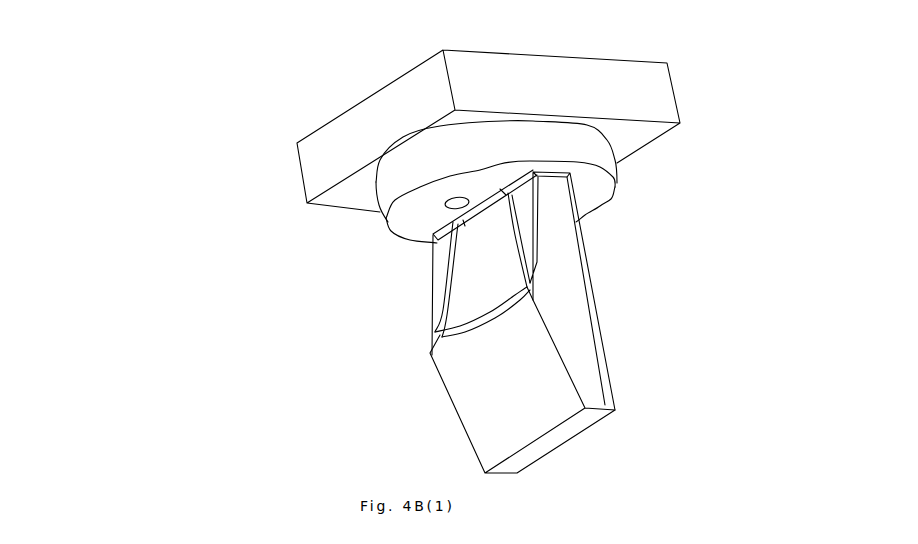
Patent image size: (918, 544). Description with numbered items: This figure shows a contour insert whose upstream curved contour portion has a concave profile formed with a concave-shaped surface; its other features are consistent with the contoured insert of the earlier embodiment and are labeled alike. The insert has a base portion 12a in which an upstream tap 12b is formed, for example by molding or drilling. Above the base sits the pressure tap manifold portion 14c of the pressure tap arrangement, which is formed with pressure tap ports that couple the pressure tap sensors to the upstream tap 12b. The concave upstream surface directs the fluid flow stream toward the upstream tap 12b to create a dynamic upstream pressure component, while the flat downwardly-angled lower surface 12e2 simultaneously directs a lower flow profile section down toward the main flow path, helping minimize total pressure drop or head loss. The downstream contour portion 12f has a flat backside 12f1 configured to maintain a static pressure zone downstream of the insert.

The pressure tap manifold portion 14c is at (355, 132).
The base portion 12a is at (583, 154).
The upstream tap 12b is at (446, 201).
The downstream contour portion 12f is at (603, 273).
The flat backside 12f1 is at (598, 322).
The flat downwardly-angled lower surface 12e2 is at (485, 368).